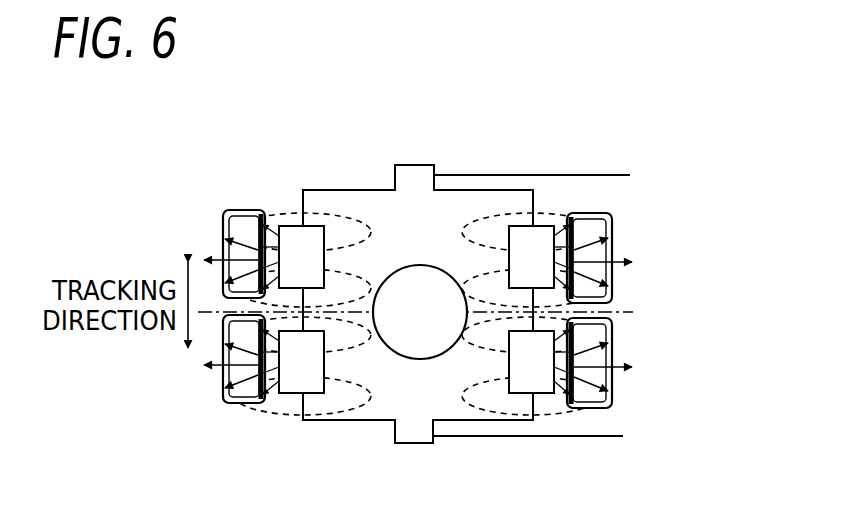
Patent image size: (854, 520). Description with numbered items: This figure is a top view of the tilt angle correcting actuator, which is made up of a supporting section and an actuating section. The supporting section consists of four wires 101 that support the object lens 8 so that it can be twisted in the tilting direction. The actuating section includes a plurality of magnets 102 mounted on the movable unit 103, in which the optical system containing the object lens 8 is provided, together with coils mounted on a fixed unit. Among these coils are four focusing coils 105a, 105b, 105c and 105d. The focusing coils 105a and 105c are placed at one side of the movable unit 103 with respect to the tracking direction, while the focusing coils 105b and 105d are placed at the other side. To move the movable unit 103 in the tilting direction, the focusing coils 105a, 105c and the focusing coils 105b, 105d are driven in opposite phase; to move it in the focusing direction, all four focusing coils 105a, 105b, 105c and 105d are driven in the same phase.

The object lens 8 is at (393, 337).
The wires 101 is at (602, 175).
The magnets 102 is at (291, 238).
The movable unit 103 is at (457, 412).
The focusing coil 105a is at (222, 232).
The focusing coil 105b is at (222, 385).
The focusing coil 105c is at (613, 248).
The focusing coil 105d is at (613, 350).